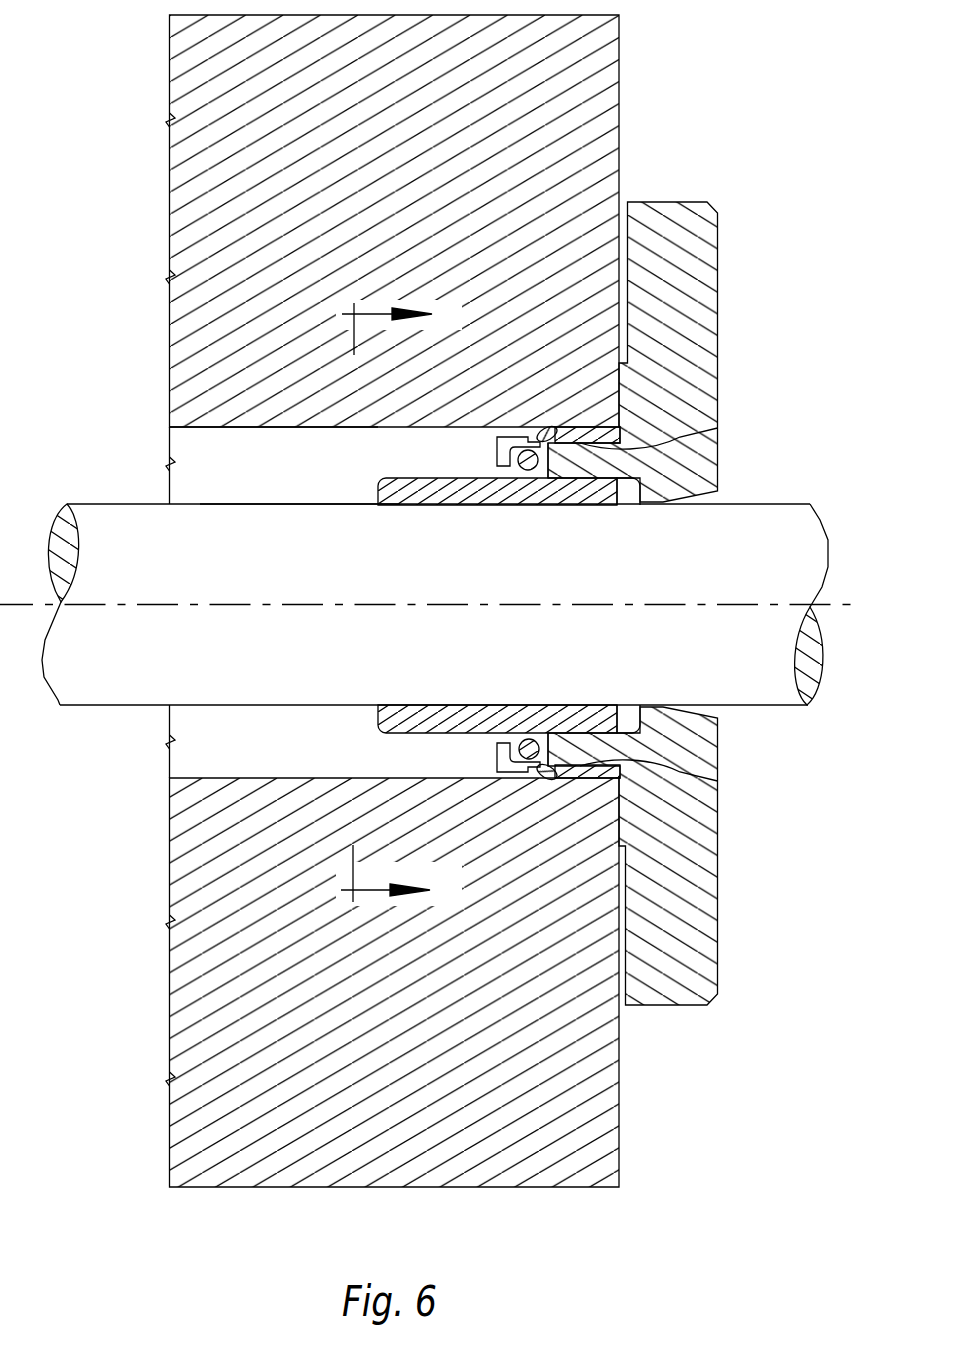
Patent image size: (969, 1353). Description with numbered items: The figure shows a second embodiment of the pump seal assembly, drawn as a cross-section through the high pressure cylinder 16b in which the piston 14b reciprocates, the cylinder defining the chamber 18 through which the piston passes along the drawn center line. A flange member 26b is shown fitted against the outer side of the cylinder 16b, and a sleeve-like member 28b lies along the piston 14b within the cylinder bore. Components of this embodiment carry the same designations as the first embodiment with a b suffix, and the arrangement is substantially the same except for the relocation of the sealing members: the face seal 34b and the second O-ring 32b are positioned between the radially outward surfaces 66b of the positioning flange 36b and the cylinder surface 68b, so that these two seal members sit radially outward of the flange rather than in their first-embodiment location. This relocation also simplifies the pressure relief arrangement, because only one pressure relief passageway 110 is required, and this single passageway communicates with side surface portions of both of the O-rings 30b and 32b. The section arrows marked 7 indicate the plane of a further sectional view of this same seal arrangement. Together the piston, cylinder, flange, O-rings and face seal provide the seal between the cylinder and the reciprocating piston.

The high pressure cylinder 16b is at (619, 92).
The gland flange 26b is at (718, 247).
The piston 14b is at (750, 517).
The chamber 18 is at (197, 548).
The cylinder surface 68b is at (322, 430).
The sleeve 28b is at (426, 506).
The O-ring 30b is at (528, 506).
The second O-ring 32b is at (550, 427).
The face seal 34b is at (700, 429).
The positioning flange 36b is at (565, 742).
The radially outward surfaces 66b is at (570, 505).
The pressure relief passageway 110 is at (494, 441).
The section line 7 is at (397, 602).